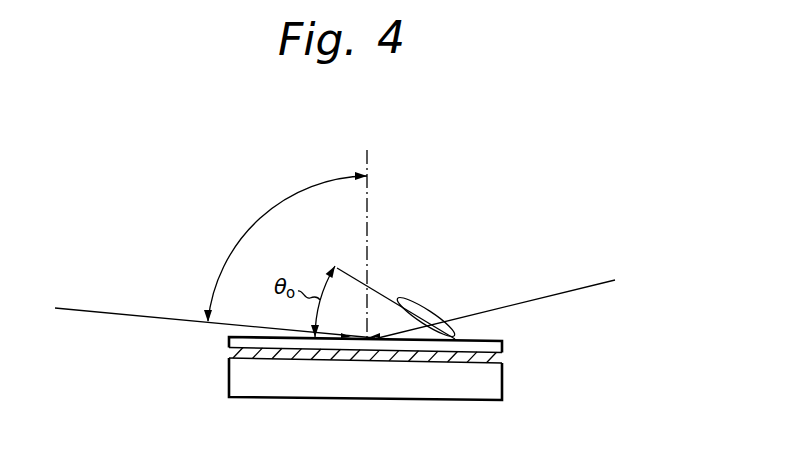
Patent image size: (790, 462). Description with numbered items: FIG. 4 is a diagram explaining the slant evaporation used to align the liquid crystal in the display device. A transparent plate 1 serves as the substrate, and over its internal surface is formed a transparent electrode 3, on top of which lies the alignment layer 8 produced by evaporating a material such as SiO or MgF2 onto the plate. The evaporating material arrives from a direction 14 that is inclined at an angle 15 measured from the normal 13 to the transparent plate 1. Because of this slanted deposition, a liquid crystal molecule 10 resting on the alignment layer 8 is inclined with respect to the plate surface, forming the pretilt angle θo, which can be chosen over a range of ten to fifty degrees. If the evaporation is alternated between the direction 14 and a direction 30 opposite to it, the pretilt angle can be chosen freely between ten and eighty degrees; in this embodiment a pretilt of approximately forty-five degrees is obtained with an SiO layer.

The transparent plate 1 is at (502, 390).
The transparent electrode 3 is at (502, 357).
The alignment layer 8 is at (502, 343).
The liquid crystal molecule 10 is at (430, 306).
The surface normal 13 is at (368, 161).
The evaporation direction 14 is at (128, 314).
The evaporation angle 15 is at (268, 210).
The opposite evaporation direction 30 is at (600, 280).